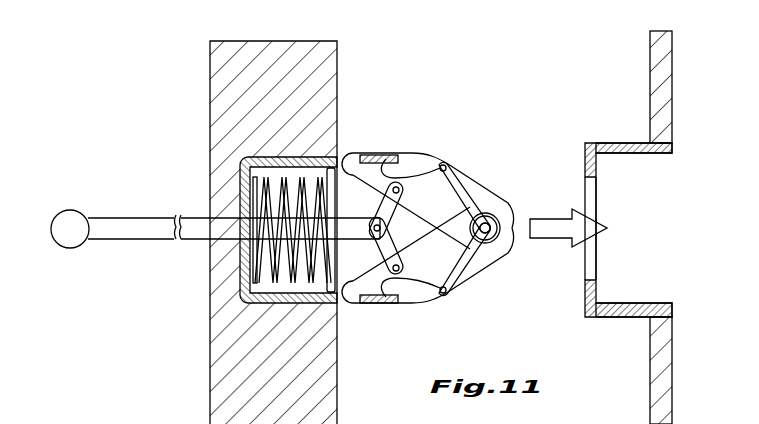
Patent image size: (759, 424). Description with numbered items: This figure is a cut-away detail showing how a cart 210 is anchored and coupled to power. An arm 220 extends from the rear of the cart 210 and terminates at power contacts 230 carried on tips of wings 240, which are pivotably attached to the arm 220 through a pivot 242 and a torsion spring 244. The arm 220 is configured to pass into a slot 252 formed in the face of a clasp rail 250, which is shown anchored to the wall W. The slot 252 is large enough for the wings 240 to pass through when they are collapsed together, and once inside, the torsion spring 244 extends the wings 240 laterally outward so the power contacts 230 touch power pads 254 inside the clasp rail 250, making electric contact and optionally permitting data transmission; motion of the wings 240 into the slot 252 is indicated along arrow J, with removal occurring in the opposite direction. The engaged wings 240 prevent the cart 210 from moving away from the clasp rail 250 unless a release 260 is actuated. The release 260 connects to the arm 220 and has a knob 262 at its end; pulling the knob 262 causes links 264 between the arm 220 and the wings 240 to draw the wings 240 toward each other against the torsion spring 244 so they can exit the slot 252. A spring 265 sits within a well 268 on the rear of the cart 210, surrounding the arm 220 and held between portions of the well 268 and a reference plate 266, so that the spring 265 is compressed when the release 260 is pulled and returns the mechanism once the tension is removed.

The cart 210 is at (255, 86).
The arm 220 is at (352, 156).
The power contacts 230 is at (446, 166).
The wings 240 is at (455, 190).
The pivot 242 is at (505, 213).
The torsion spring 244 is at (494, 240).
The clasp rail 250 is at (598, 318).
The slot 252 is at (600, 200).
The power pads 254 is at (625, 158).
The release 260 is at (132, 218).
The knob 262 is at (71, 211).
The links 264 is at (384, 258).
The spring 265 is at (268, 255).
The reference plate 266 is at (328, 270).
The well 268 is at (257, 305).
The arrow J is at (553, 235).
The wall W is at (665, 60).